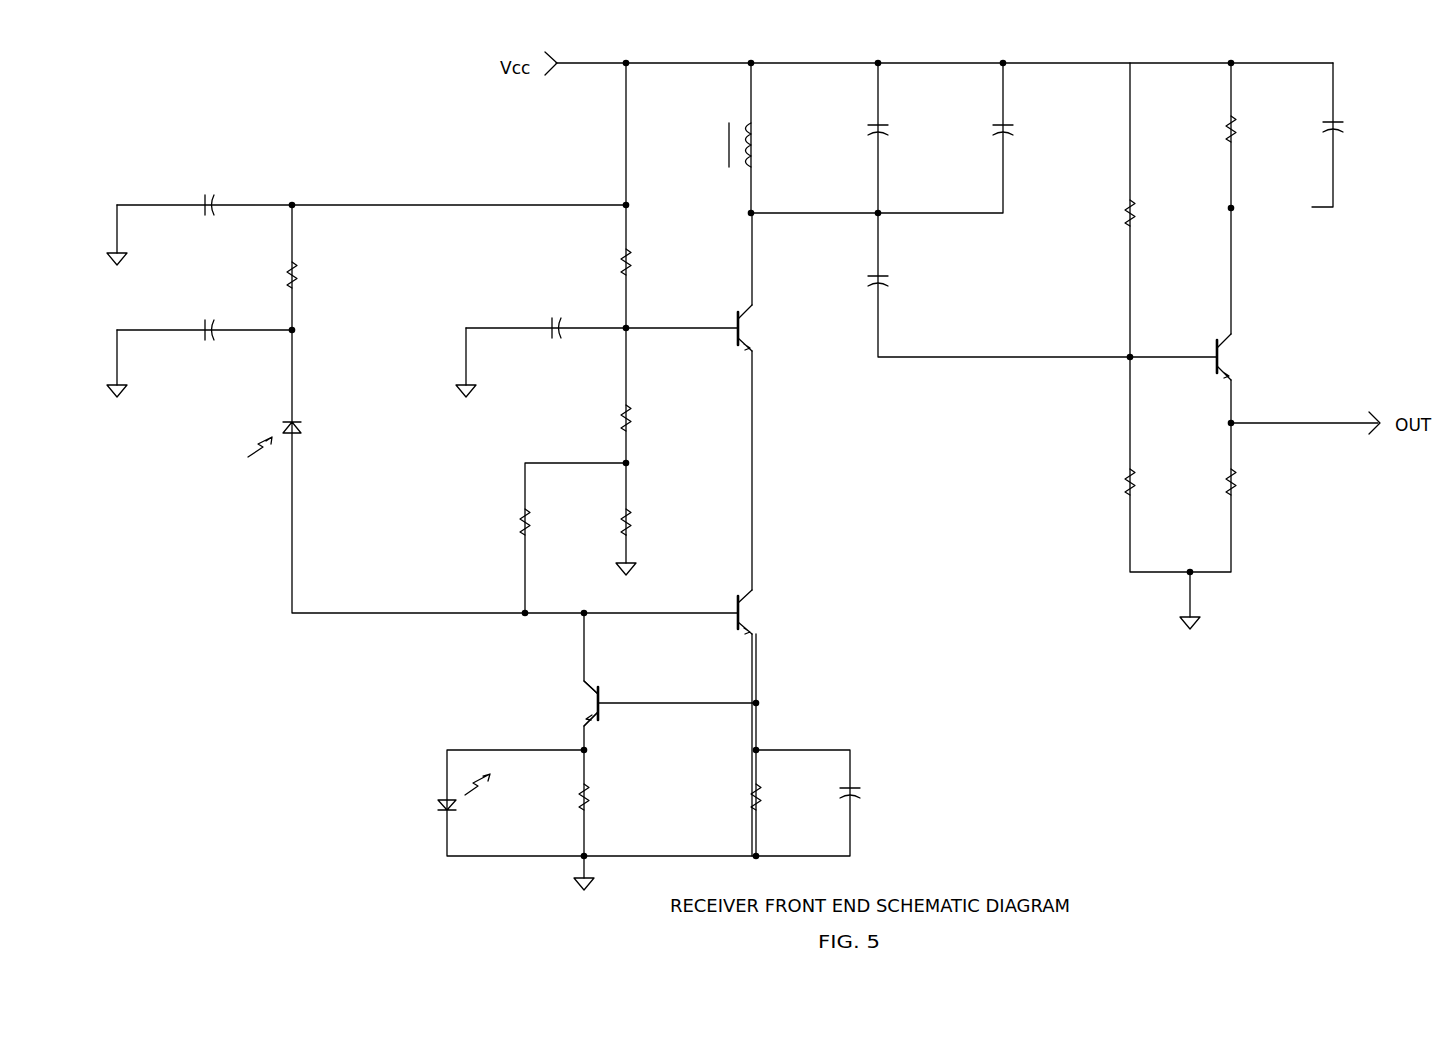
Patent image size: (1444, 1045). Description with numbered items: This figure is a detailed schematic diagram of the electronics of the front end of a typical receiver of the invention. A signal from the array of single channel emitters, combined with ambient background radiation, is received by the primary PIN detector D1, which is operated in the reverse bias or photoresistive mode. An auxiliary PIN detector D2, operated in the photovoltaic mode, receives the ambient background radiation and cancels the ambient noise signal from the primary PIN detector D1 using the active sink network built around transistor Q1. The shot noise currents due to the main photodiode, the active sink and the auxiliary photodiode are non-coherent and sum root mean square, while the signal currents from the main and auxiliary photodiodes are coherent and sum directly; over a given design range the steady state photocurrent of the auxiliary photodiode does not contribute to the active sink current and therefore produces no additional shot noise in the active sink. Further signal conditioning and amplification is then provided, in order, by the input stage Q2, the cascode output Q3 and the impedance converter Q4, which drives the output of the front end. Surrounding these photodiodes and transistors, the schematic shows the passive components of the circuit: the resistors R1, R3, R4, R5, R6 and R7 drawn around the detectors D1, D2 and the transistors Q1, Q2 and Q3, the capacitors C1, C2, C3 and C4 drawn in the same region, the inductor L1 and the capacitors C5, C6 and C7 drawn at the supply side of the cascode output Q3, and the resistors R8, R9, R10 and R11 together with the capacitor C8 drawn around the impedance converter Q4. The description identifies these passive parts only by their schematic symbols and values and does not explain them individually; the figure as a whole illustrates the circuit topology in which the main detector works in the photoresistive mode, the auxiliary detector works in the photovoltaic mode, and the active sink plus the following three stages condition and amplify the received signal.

The capacitor 1uF/16V C1 is at (883, 789).
The capacitor 10uF/10V C2 is at (209, 333).
The capacitor 1uF/16V C3 is at (552, 331).
The capacitor 10uF/10V C4 is at (209, 208).
The capacitor 1000pF C5 is at (914, 130).
The capacitor 810pF C6 is at (1030, 130).
The capacitor 0.022 C7 is at (906, 280).
The capacitor 0.022 C8 is at (1362, 129).
The resistor R1 is at (695, 798).
The resistor 10M R3 is at (551, 521).
The resistor 5.1K R4 is at (655, 521).
The resistor 10K R5 is at (652, 418).
The resistor 10K R6 is at (652, 261).
The resistor 1K R7 is at (314, 275).
The resistor 120K R8 is at (1160, 481).
The resistor 27K R9 is at (1154, 213).
The resistor 5.1K R10 is at (1259, 130).
The resistor 1.8K R11 is at (1260, 481).
The inductor 20mH L1 is at (773, 144).
The primary PIN detector D1 is at (313, 436).
The auxiliary PIN detector D2 is at (428, 796).
The active sink network Q1 is at (547, 703).
The input stage Q2 is at (787, 613).
The cascode output Q3 is at (787, 329).
The impedance converter Q4 is at (1262, 357).